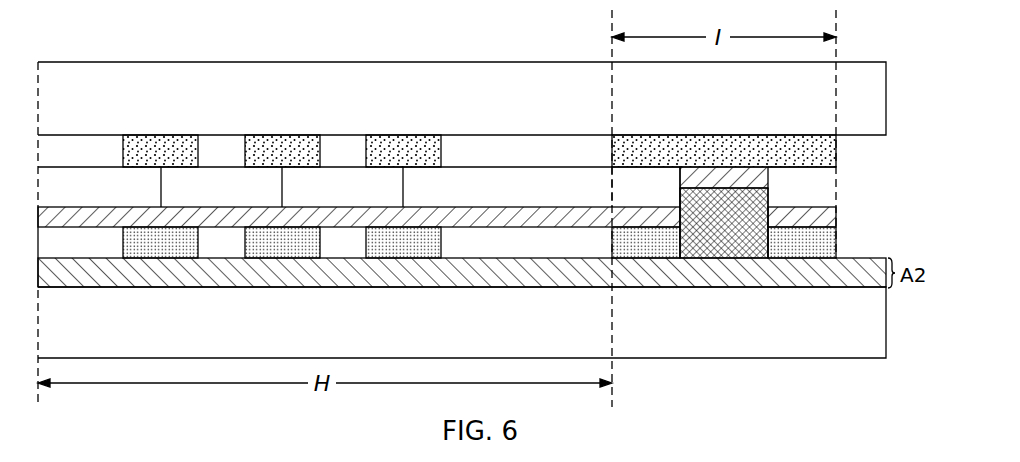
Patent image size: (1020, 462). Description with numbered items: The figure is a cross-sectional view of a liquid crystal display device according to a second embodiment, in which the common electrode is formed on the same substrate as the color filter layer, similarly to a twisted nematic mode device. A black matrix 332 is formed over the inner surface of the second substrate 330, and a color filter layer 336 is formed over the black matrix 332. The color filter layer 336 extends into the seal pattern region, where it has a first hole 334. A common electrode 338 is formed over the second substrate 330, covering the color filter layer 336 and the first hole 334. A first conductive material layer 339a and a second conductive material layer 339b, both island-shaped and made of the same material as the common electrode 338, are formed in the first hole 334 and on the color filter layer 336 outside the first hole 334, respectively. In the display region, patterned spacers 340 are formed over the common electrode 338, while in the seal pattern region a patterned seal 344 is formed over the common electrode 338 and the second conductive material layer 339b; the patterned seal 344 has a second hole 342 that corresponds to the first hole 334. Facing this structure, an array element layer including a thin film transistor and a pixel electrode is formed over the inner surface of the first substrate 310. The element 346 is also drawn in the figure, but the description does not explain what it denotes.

The substrate 310 is at (63, 335).
The encapsulation substrate 330 is at (88, 107).
The color filter 332 is at (163, 152).
The pixel electrode 334 is at (702, 206).
The pixel defining layer 336 is at (558, 197).
The insulating layer 338 is at (493, 217).
The opposite electrode portion 339a is at (746, 183).
The opposite electrode layer 339b is at (826, 220).
The thin film transistor 340 is at (168, 250).
The organic emission layer 342 is at (746, 254).
The conductive layer 344 is at (657, 250).
The contact portion 346 is at (712, 258).